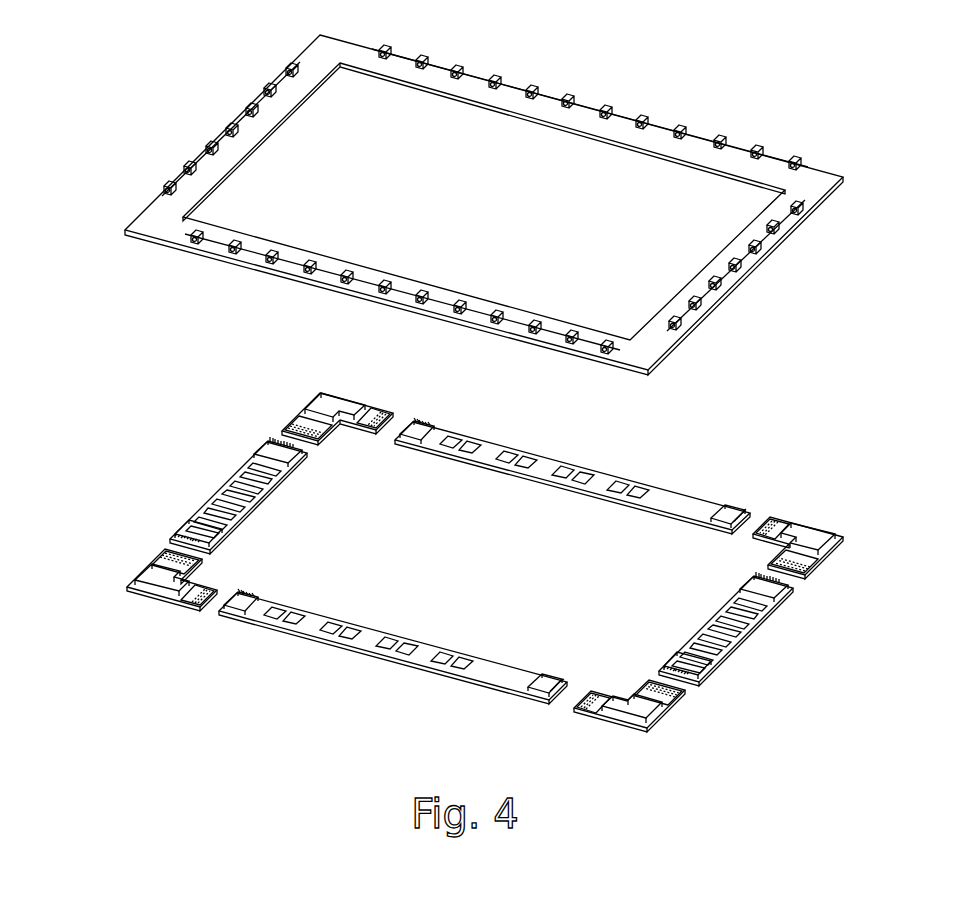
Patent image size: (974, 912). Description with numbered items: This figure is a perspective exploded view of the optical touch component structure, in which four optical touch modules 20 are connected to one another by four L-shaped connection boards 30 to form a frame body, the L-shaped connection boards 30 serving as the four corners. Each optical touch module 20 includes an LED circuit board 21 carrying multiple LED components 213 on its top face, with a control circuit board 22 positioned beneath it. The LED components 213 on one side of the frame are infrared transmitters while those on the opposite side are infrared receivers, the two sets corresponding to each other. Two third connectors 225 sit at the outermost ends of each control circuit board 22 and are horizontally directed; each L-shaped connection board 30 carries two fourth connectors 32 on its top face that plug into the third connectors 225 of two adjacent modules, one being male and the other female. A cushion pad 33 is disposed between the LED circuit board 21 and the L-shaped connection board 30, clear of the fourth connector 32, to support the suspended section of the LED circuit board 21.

The optical touch module 20 is at (219, 120).
The LED circuit board 21 is at (158, 196).
The LED components 213 is at (283, 72).
The control circuit board 22 is at (226, 505).
The third connector 225 is at (270, 443).
The L-shaped connection board 30 is at (330, 398).
The fourth connector 32 is at (313, 437).
The cushion pad 33 is at (340, 407).